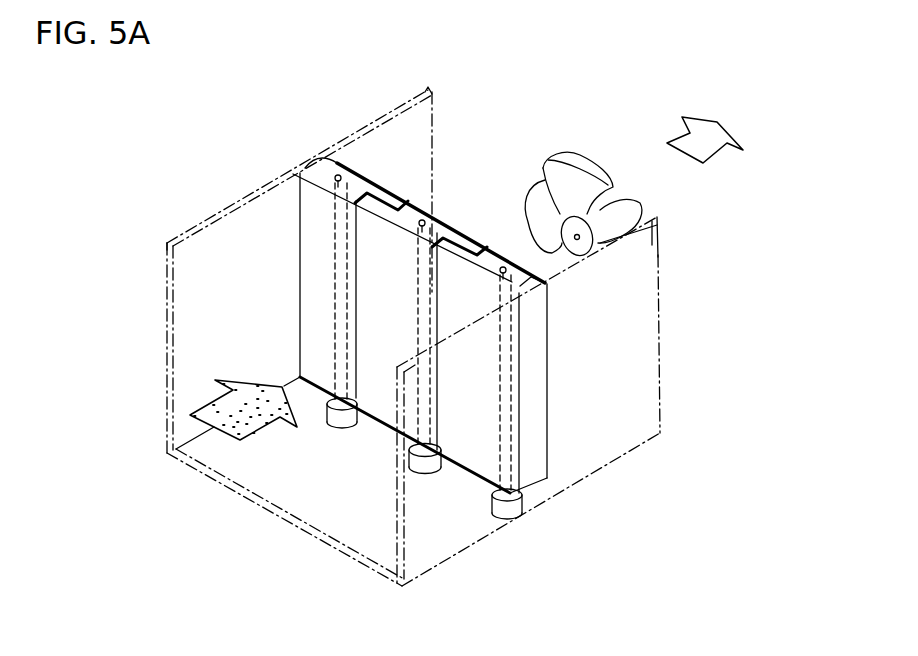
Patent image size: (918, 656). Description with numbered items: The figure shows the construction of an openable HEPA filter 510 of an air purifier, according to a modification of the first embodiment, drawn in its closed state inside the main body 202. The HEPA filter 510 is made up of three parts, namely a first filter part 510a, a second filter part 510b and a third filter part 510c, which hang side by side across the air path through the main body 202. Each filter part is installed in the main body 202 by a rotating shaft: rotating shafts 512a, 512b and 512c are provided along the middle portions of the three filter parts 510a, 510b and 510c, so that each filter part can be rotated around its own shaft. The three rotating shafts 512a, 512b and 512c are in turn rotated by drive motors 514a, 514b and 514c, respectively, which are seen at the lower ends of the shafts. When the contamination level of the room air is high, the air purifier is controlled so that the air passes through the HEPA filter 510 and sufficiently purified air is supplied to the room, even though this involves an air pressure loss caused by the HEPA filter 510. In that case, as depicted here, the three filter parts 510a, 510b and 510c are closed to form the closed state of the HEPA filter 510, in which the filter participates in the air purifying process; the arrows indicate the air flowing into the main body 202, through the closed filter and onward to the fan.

The main body 202 is at (206, 204).
The HEPA filter 510 is at (320, 318).
The first filter part 510a is at (308, 166).
The second filter part 510b is at (505, 277).
The third filter part 510c is at (428, 222).
The rotating shaft 512a is at (327, 158).
The rotating shaft 512b is at (543, 284).
The rotating shaft 512c is at (421, 216).
The drive motor 514a is at (340, 428).
The drive motor 514b is at (519, 508).
The drive motor 514c is at (428, 473).